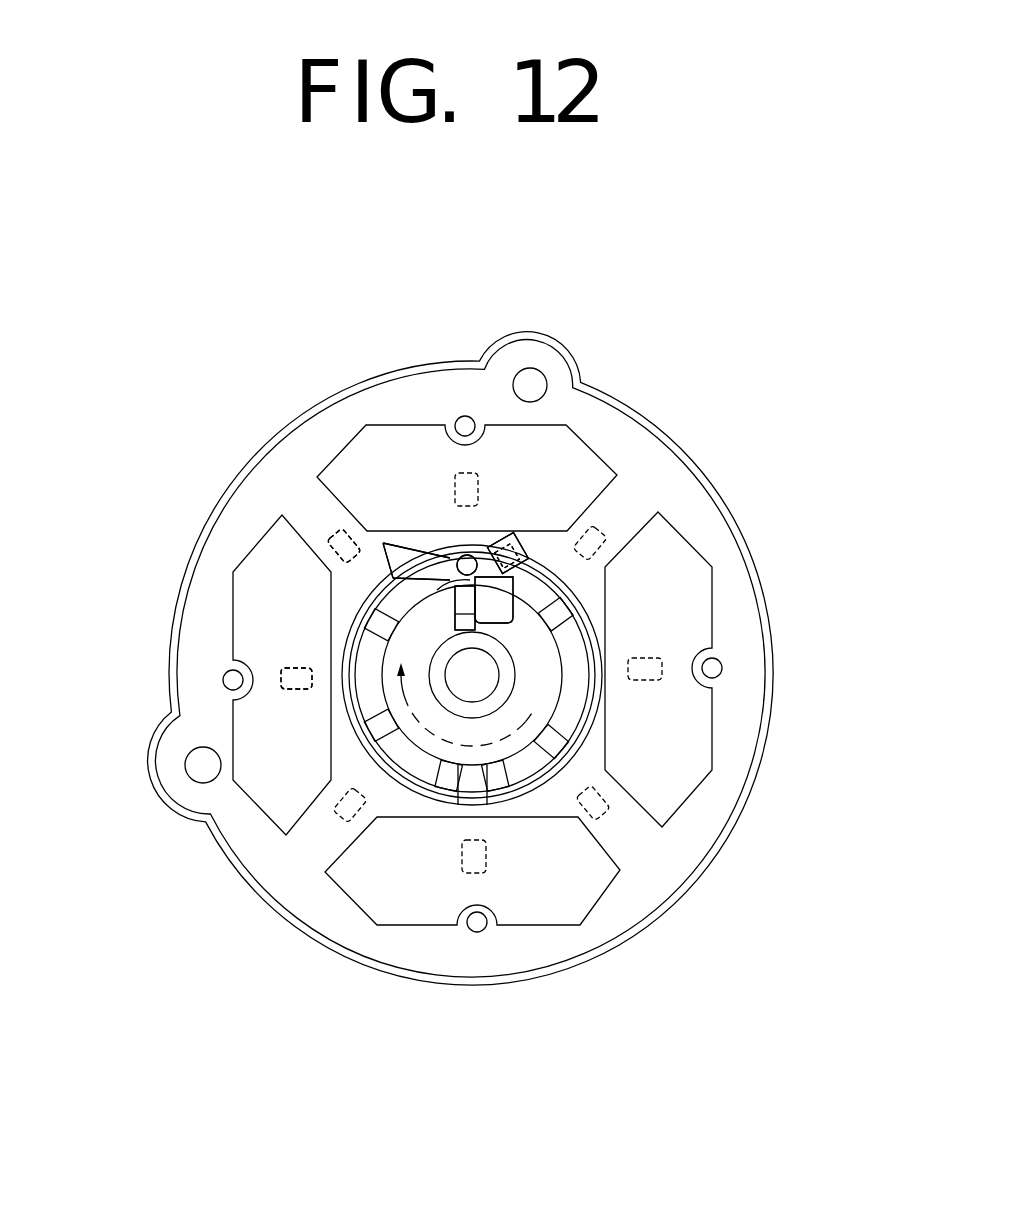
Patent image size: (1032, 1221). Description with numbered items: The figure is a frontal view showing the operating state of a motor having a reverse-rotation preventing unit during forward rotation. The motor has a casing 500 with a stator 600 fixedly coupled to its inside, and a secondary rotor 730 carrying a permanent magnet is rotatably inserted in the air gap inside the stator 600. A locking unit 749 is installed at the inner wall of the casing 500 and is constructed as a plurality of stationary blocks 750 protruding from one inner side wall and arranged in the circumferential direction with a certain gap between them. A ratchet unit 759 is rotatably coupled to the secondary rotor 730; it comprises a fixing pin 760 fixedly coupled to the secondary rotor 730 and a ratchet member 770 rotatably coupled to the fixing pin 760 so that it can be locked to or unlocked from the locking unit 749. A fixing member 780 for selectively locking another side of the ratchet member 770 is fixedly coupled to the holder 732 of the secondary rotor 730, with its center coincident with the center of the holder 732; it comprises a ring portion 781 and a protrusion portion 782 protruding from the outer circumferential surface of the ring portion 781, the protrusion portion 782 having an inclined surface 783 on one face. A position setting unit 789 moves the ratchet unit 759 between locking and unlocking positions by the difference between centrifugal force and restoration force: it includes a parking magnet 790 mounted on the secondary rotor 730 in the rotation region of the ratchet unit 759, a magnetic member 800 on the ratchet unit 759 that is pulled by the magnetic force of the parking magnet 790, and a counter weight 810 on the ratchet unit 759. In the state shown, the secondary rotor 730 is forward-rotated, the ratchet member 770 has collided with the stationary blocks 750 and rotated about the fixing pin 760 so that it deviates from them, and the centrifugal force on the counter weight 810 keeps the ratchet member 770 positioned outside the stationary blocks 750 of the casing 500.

The casing 500 is at (780, 625).
The stator 600 is at (708, 877).
The secondary rotor 730 is at (383, 730).
The holder 732 is at (515, 728).
The locking unit 749 is at (217, 402).
The stationary blocks 750 is at (283, 667).
The ratchet unit 759 is at (345, 297).
The fixing pin 760 is at (450, 565).
The ratchet member 770 is at (432, 531).
The fixing member 780 is at (527, 683).
The ring portion 781 is at (455, 703).
The protrusion portion 782 is at (470, 636).
The inclined surface 783 is at (472, 616).
The position setting unit 789 is at (570, 267).
The parking magnet 790 is at (491, 600).
The magnetic member 800 is at (501, 542).
The counter weight 810 is at (517, 540).